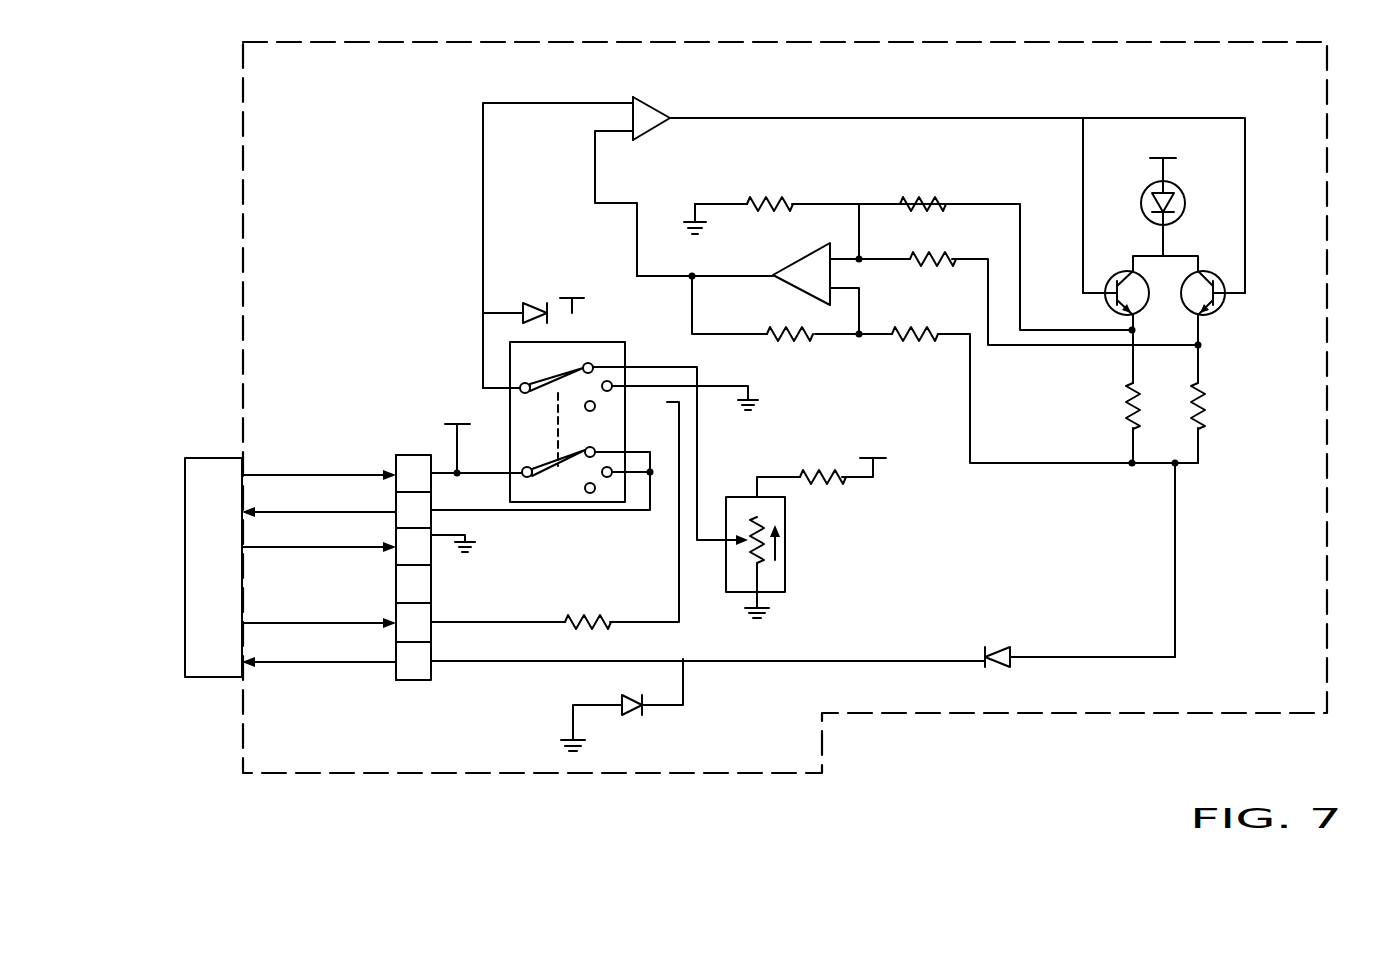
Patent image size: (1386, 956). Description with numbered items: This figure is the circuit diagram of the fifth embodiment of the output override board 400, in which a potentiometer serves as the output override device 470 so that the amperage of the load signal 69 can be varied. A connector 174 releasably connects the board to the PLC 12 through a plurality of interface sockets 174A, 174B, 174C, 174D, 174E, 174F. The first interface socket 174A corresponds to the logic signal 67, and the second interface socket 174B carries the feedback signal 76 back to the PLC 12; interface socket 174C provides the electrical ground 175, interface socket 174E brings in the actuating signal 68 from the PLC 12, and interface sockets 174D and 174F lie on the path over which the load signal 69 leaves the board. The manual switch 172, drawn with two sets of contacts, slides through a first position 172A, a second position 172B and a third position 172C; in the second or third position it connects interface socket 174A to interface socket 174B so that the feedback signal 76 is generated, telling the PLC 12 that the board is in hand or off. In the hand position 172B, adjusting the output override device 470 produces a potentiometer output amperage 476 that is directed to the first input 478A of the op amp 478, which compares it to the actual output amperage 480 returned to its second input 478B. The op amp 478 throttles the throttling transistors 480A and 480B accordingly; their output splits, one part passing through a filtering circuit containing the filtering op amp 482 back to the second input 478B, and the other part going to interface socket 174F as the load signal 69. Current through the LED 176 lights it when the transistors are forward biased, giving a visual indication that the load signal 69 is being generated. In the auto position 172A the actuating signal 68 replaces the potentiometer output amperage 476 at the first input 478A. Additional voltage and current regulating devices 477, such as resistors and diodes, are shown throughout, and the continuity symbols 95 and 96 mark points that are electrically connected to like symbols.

The output override board 400 is at (458, 34).
The op amp 478 is at (664, 98).
The first input 478A is at (632, 100).
The second input 478B is at (630, 135).
The actual output amperage 480 is at (632, 240).
The filtering op amp 482 is at (812, 264).
The voltage and current regulating devices 477 is at (762, 198).
The circuit continuity symbol 95 is at (684, 233).
The circuit continuity symbol 96 is at (1133, 140).
The LED 176 is at (1170, 190).
The throttling transistor 480A is at (1143, 310).
The throttling transistor 480B is at (1222, 302).
The manual switch 172 is at (497, 345).
The first position 172A is at (594, 410).
The second position 172B is at (588, 362).
The third position 172C is at (607, 380).
The potentiometer output amperage 476 is at (699, 440).
The output override device 470 is at (787, 552).
The PLC 12 is at (218, 607).
The connector 174 is at (418, 692).
The first interface socket 174A is at (396, 462).
The second interface socket 174B is at (402, 504).
The interface socket 174C is at (400, 540).
The interface socket 174D is at (402, 578).
The interface socket 174E is at (400, 617).
The interface socket 174F is at (400, 655).
The logic signal 67 is at (275, 472).
The feedback signal 76 is at (262, 515).
The electrical ground 175 is at (250, 550).
The actuating signal 68 is at (258, 627).
The load signal 69 is at (268, 667).